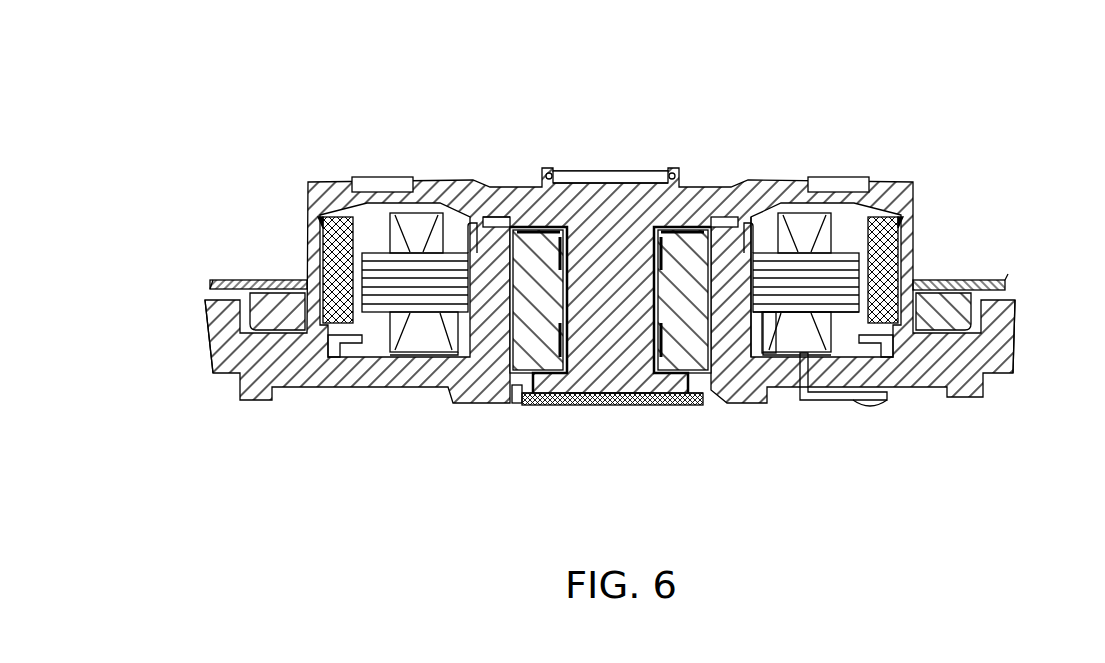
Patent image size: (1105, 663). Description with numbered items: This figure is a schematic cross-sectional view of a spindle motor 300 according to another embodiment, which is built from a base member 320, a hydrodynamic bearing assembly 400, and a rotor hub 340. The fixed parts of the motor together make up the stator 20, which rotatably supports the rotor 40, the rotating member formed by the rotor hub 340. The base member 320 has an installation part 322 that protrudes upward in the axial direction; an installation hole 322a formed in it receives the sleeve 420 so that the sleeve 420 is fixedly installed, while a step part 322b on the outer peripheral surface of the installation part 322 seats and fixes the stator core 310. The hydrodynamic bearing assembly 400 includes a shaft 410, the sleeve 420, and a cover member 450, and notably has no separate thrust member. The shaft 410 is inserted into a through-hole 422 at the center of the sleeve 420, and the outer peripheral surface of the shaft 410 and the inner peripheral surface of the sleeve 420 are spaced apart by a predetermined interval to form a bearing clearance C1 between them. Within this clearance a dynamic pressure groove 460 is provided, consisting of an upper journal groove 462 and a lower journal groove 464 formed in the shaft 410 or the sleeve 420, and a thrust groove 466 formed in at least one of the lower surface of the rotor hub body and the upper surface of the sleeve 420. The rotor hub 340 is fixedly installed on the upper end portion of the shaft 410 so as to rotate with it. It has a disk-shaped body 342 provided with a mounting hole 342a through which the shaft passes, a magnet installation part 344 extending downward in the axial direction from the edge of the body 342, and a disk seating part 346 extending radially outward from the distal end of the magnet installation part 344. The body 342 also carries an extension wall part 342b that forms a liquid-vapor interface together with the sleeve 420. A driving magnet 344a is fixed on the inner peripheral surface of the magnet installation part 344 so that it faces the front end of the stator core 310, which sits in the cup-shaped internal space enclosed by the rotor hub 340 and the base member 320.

The spindle motor 300 is at (640, 20).
The stator 20 is at (992, 388).
The rotor 40 is at (913, 173).
The rotor hub 340 is at (352, 102).
The body 342 is at (457, 190).
The mounting hole 342a is at (557, 322).
The extension wall part 342b is at (495, 240).
The magnet installation part 344 is at (272, 302).
The driving magnet 344a is at (900, 267).
The disk seating part 346 is at (272, 282).
The stator core 310 is at (834, 300).
The base member 320 is at (337, 390).
The installation part 322 is at (752, 350).
The installation hole 322a is at (686, 404).
The step part 322b is at (768, 310).
The hydrodynamic bearing assembly 400 is at (617, 375).
The shaft 410 is at (597, 404).
The sleeve 420 is at (713, 404).
The through-hole 422 is at (643, 404).
The cover member 450 is at (612, 406).
The bearing clearance C1 is at (546, 406).
The dynamic pressure groove 460 is at (748, 100).
The upper journal groove 462 is at (585, 330).
The lower journal groove 464 is at (608, 335).
The thrust groove 466 is at (680, 335).